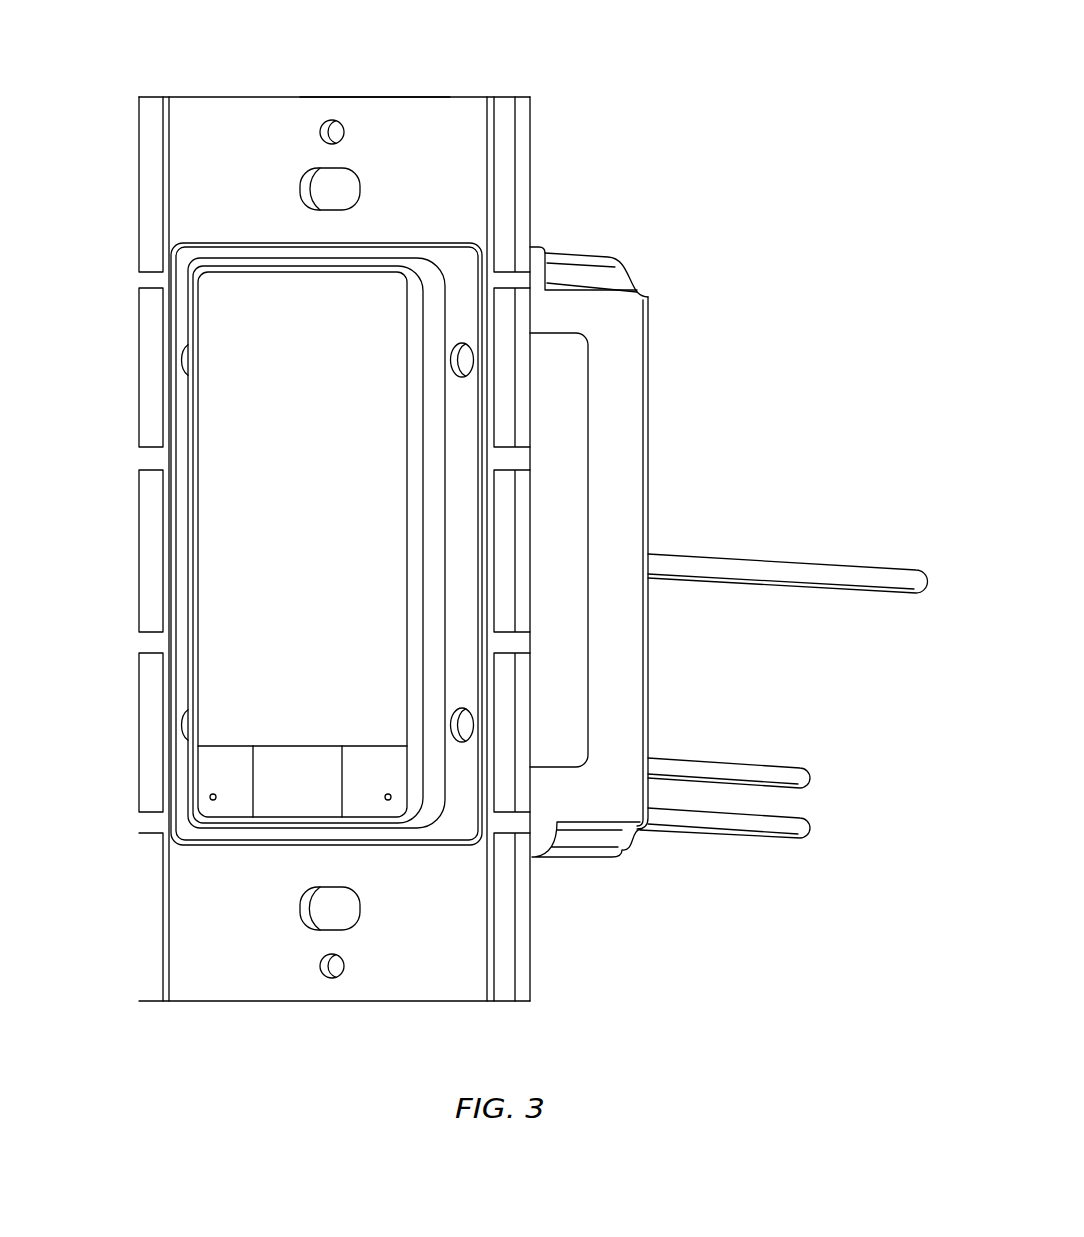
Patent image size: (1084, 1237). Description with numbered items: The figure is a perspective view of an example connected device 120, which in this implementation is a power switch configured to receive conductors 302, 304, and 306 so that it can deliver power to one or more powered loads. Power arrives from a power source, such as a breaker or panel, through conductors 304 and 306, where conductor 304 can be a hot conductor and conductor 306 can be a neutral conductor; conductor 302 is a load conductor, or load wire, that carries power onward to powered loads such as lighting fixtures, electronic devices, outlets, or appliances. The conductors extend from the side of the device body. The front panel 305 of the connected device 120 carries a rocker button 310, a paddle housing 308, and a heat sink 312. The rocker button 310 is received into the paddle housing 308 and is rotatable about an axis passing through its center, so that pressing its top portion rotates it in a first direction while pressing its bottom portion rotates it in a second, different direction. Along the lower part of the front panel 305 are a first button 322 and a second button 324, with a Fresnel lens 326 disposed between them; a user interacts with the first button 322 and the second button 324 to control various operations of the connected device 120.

The connected device 120 is at (613, 95).
The heat sink 312 is at (218, 120).
The front panel 305 is at (384, 92).
The paddle housing 308 is at (483, 246).
The rocker button 310 is at (213, 463).
The first button 322 is at (207, 759).
The second button 324 is at (372, 765).
The Fresnel lens 326 is at (274, 800).
The conductor 306 is at (637, 375).
The conductor 302 is at (838, 570).
The conductor 304 is at (768, 770).